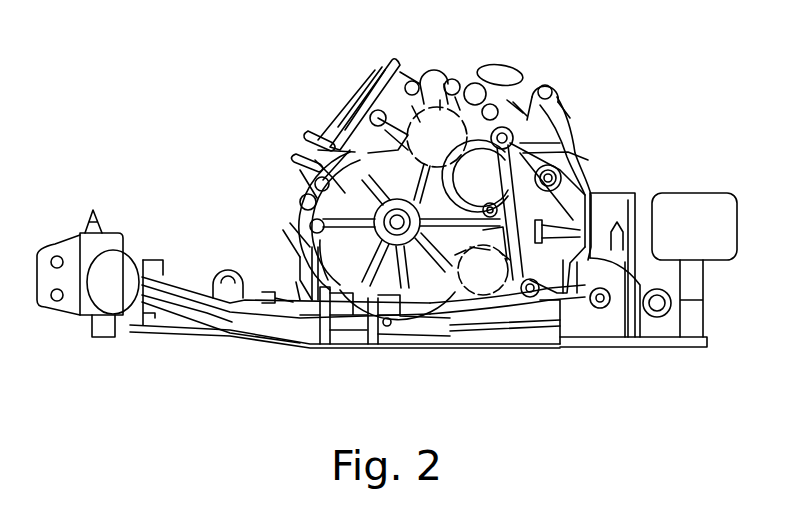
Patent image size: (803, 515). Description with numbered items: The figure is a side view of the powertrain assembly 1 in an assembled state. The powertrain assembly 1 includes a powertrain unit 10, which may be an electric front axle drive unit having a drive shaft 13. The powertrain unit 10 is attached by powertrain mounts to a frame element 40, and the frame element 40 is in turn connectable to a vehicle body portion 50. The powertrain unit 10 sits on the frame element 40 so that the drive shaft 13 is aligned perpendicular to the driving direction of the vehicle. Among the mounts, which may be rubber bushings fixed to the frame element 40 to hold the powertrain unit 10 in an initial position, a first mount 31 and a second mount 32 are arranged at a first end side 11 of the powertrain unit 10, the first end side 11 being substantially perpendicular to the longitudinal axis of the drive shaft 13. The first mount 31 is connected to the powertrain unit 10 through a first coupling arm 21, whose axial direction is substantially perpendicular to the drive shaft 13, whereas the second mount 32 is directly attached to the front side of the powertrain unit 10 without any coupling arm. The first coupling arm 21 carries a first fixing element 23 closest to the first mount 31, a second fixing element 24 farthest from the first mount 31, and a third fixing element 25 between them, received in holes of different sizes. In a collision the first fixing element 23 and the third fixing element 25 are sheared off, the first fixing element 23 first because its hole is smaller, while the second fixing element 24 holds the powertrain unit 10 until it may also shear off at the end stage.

The powertrain assembly 1 is at (698, 63).
The powertrain unit 10 is at (330, 152).
The first end side 11 is at (298, 221).
The drive shaft 13 is at (396, 212).
The first coupling arm 21 is at (528, 147).
The first fixing element 23 is at (512, 322).
The second fixing element 24 is at (525, 122).
The third fixing element 25 is at (560, 173).
The first mount 31 is at (625, 200).
The second mount 32 is at (317, 347).
The frame element 40 is at (455, 323).
The vehicle body portion 50 is at (715, 206).